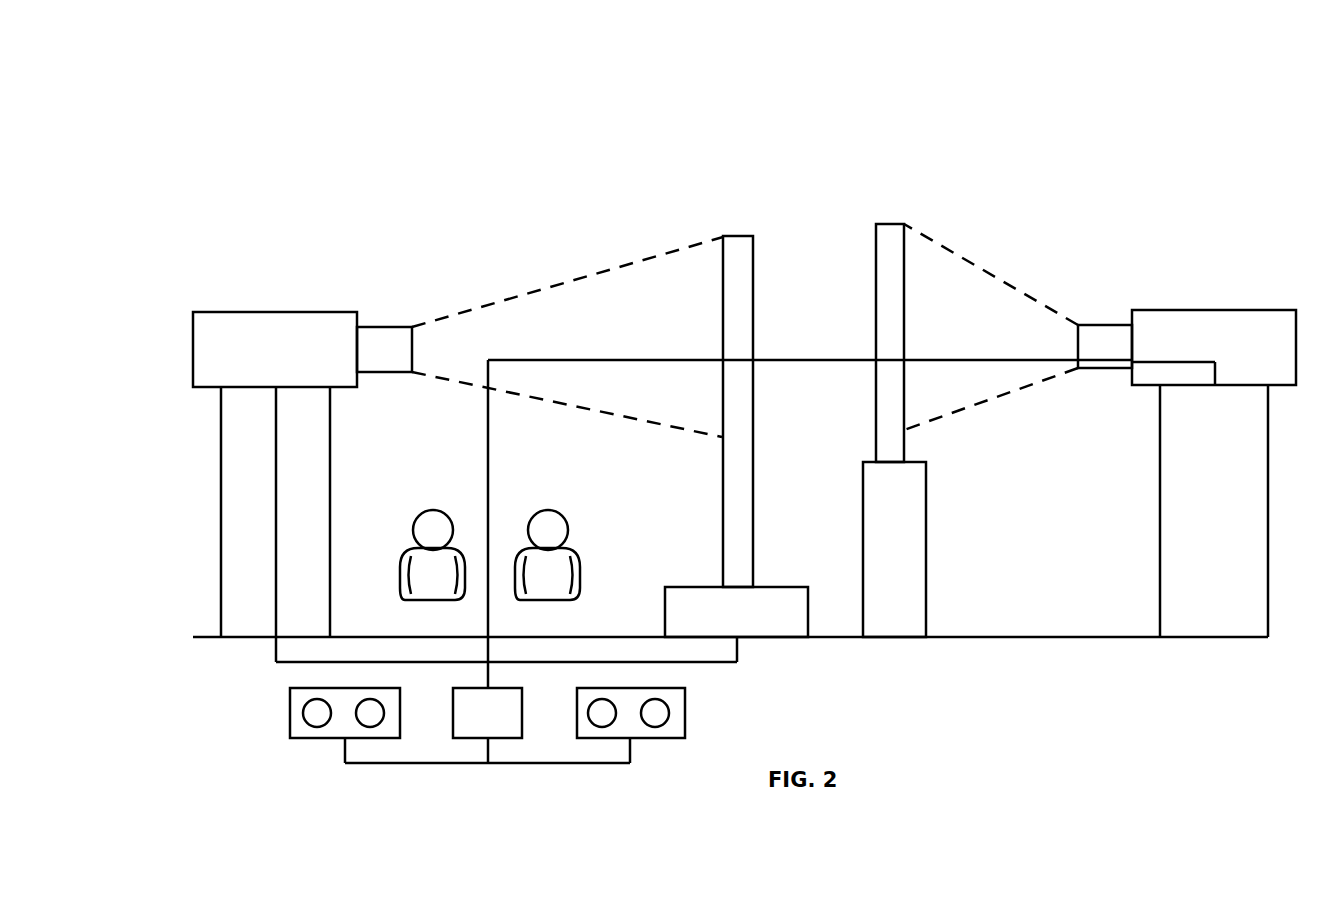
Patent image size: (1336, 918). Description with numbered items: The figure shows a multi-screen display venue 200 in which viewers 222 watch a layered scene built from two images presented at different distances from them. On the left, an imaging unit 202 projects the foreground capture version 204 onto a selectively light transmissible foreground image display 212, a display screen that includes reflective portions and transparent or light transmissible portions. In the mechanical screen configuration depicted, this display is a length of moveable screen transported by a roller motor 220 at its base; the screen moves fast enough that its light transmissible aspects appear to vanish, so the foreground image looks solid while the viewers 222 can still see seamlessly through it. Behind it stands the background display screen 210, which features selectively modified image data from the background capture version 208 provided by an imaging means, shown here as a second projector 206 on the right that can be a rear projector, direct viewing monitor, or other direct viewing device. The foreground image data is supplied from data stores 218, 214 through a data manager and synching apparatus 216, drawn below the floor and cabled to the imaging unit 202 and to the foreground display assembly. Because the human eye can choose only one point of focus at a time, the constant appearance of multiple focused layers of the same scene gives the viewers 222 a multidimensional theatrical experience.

The multi-screen display venue 200 is at (765, 102).
The imaging unit 202 is at (263, 330).
The foreground capture version 204 is at (650, 241).
The second projector 206 is at (1228, 328).
The background capture version 208 is at (998, 277).
The background display screen 210 is at (903, 440).
The selectively light transmissible foreground image display 212 is at (740, 363).
The data store 214 is at (630, 720).
The data manager and synching apparatus 216 is at (487, 720).
The data store 218 is at (343, 722).
The roller motor 220 is at (773, 630).
The viewers 222 is at (490, 571).